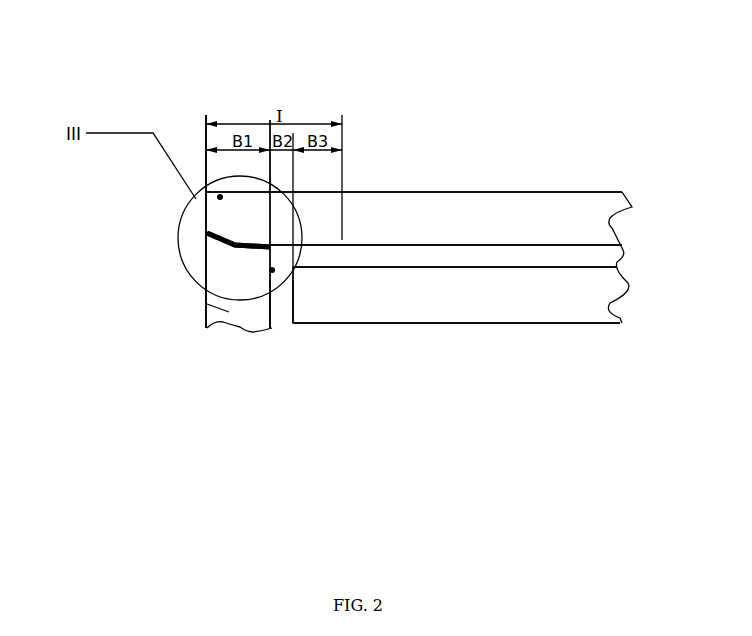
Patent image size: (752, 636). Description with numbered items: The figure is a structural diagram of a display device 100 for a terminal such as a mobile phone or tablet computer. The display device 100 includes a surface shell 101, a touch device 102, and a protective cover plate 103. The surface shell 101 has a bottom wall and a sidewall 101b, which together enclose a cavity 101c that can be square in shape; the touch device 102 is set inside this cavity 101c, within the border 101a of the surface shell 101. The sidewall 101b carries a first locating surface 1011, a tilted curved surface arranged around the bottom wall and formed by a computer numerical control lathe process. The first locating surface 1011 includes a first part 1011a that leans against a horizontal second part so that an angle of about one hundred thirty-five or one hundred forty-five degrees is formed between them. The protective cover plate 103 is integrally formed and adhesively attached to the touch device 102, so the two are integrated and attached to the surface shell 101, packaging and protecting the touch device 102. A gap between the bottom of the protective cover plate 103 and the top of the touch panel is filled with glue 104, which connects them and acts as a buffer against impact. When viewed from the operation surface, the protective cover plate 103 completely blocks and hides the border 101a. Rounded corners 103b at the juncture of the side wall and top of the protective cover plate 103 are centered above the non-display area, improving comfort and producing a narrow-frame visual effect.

The display device 100 is at (286, 95).
The surface shell 101 is at (78, 213).
The border 101a is at (207, 304).
The sidewall 101b is at (272, 270).
The cavity 101c is at (284, 306).
The first locating surface 1011 is at (207, 234).
The first part 1011a is at (207, 243).
The touch device 102 is at (560, 308).
The protective cover plate 103 is at (593, 227).
The rounded corners 103b is at (220, 197).
The glue 104 is at (590, 260).